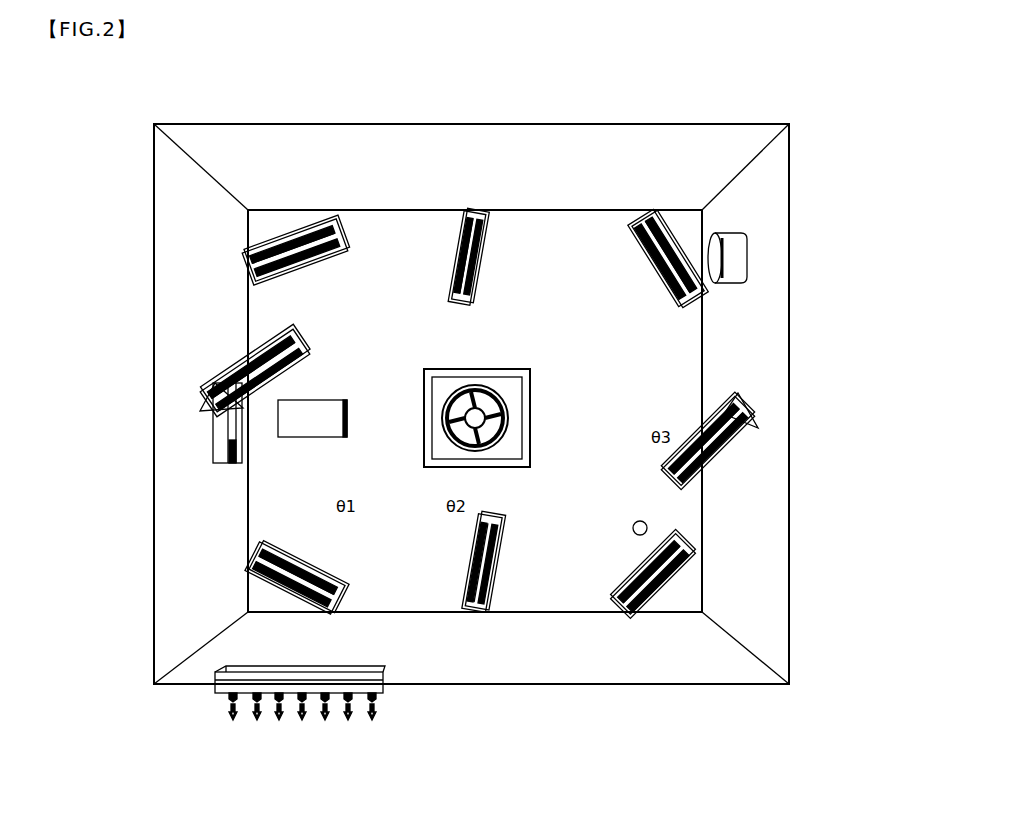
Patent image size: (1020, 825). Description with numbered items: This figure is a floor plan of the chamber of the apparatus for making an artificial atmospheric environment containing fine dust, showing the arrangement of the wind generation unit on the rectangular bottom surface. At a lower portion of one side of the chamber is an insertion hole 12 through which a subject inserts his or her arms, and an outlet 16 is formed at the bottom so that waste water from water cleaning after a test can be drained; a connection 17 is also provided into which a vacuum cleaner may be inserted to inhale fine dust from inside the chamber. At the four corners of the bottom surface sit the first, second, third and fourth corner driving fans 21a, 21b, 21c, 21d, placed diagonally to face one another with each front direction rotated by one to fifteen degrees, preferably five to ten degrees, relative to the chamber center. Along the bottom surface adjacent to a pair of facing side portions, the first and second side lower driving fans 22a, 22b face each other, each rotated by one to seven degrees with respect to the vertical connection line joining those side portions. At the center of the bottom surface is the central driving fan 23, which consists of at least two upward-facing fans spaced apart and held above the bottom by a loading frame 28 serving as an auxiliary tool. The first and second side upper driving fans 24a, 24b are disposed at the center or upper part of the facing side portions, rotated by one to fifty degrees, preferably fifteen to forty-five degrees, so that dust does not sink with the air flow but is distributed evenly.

The insertion hole 12 is at (222, 440).
The outlet 16 is at (648, 526).
The connection 17 is at (728, 257).
The first corner driving fan 21a is at (257, 583).
The second corner driving fan 21b is at (252, 252).
The third corner driving fan 21c is at (677, 248).
The fourth corner driving fan 21d is at (673, 590).
The first side lower driving fan 22a is at (469, 238).
The second side lower driving fan 22b is at (481, 612).
The central driving fan 23 is at (542, 420).
The first side upper driving fan 24a is at (215, 378).
The second side upper driving fan 24b is at (757, 430).
The loading frame 28 is at (443, 447).